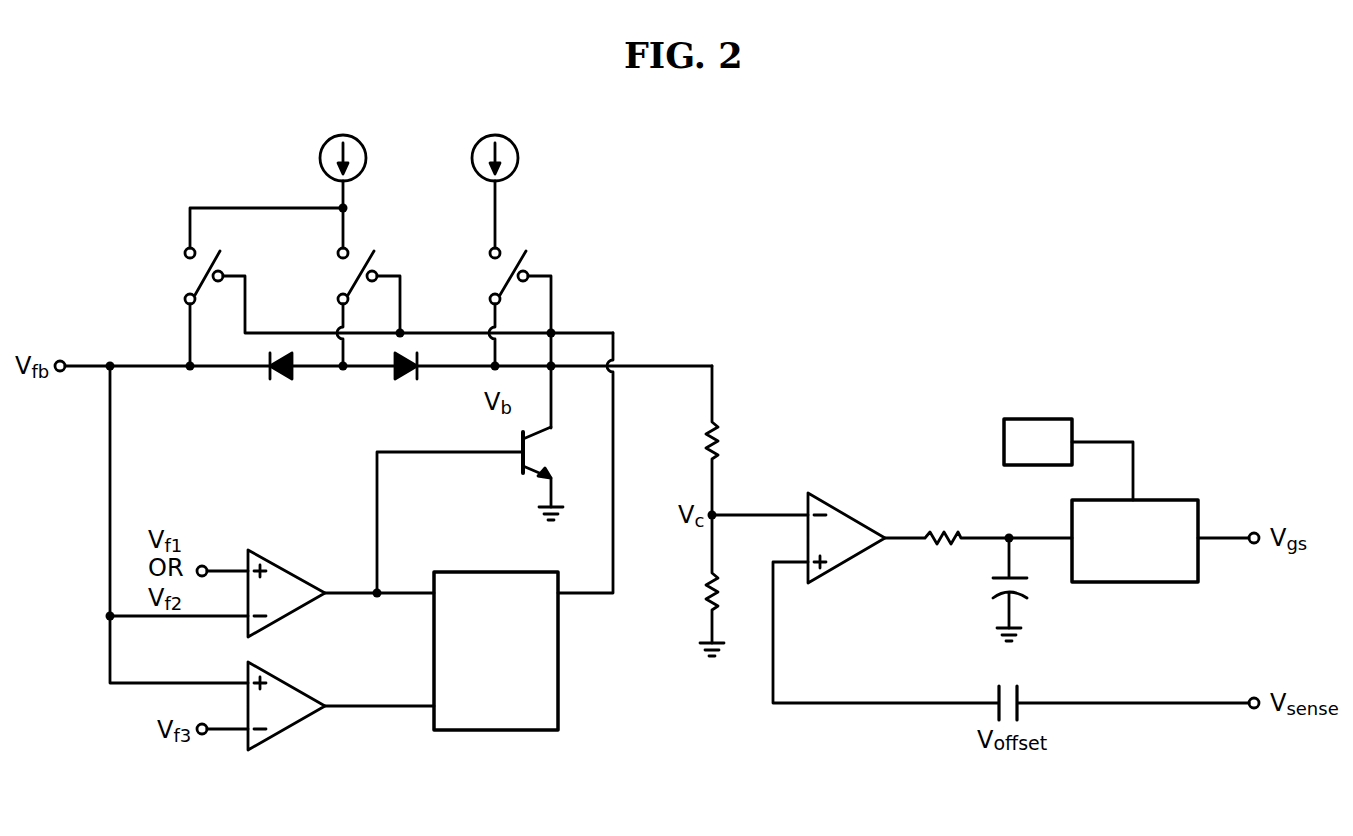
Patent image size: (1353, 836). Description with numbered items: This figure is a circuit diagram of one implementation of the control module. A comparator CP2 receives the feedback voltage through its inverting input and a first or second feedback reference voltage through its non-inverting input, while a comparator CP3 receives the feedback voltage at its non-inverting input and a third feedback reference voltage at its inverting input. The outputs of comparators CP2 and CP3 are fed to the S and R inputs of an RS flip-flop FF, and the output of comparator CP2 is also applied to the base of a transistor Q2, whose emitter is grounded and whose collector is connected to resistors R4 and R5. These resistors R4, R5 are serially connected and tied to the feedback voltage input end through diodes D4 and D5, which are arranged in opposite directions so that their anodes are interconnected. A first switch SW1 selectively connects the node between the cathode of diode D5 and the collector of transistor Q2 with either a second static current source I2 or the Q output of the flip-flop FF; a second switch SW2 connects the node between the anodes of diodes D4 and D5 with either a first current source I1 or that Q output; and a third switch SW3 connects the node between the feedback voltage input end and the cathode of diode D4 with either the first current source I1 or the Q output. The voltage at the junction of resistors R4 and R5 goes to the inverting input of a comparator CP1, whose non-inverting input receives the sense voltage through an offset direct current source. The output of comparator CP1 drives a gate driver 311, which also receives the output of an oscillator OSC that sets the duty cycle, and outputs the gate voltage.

The gate driver 311 is at (1160, 498).
The first switch SW1 is at (497, 338).
The second switch SW2 is at (345, 307).
The third switch SW3 is at (375, 287).
The diode D4 is at (283, 385).
The diode D5 is at (408, 385).
The first current source I1 is at (343, 174).
The second static current source I2 is at (495, 174).
The transistor Q2 is at (551, 473).
The comparator CP1 is at (851, 535).
The comparator CP2 is at (286, 589).
The comparator CP3 is at (286, 702).
The resistor R4 is at (694, 440).
The resistor R5 is at (697, 585).
The RS flip-flop FF is at (496, 651).
The oscillator OSC is at (1038, 442).